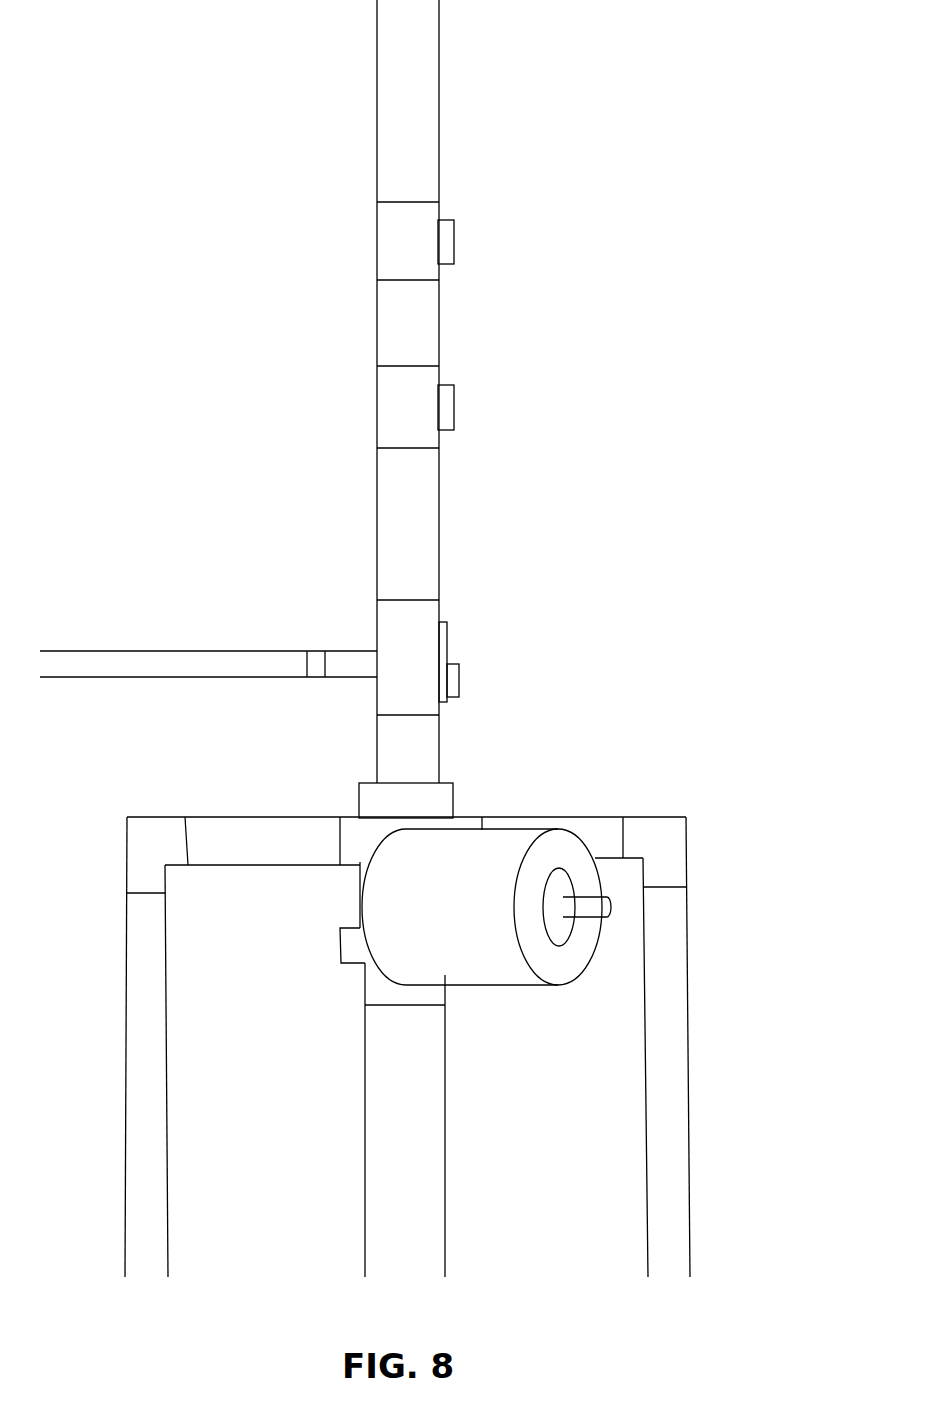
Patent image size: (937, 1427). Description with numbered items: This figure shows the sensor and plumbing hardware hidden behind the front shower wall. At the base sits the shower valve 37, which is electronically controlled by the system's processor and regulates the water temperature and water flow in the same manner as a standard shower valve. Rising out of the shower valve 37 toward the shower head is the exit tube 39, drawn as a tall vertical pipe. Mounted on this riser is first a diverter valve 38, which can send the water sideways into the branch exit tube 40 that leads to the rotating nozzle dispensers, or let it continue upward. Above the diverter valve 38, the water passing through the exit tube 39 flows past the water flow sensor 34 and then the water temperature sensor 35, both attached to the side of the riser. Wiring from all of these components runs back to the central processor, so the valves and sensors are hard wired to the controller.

The water flow sensor 34 is at (439, 375).
The water temperature sensor 35 is at (492, 233).
The shower valve 37 is at (598, 888).
The diverter valve 38 is at (463, 688).
The exit tube 39 is at (432, 44).
The exit tube to rotating nozzle dispensers 40 is at (132, 651).